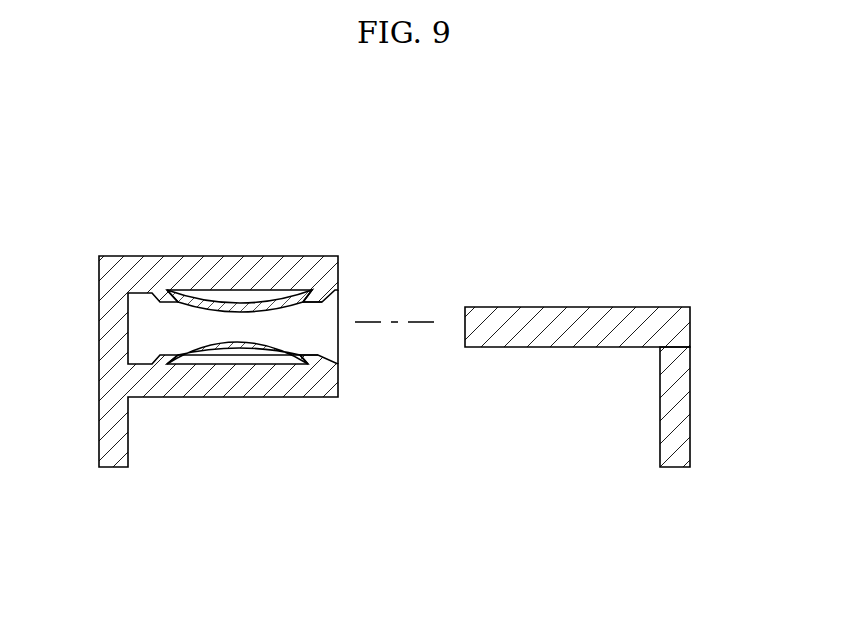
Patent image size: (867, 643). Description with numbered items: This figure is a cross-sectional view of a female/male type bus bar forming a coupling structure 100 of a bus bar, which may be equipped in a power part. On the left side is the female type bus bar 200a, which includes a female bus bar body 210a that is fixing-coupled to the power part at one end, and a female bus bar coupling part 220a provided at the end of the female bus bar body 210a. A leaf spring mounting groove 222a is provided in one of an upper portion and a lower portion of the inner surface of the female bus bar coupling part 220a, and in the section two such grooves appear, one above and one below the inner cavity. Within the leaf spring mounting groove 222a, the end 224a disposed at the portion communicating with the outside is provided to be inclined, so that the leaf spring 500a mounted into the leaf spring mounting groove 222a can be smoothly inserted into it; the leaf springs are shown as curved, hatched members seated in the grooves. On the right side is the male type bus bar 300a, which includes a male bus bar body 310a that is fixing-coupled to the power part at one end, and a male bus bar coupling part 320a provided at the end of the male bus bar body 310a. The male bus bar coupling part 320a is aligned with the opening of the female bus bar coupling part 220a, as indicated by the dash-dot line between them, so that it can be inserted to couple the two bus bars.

The coupling structure 100 is at (149, 188).
The female type bus bar 200a is at (387, 547).
The female bus bar body 210a is at (110, 462).
The female bus bar coupling part 220a is at (292, 351).
The leaf spring mounting groove 222a is at (237, 358).
The end 224a is at (338, 352).
The leaf spring 500a is at (200, 356).
The male type bus bar 300a is at (712, 532).
The male bus bar body 310a is at (677, 455).
The male bus bar coupling part 320a is at (530, 337).